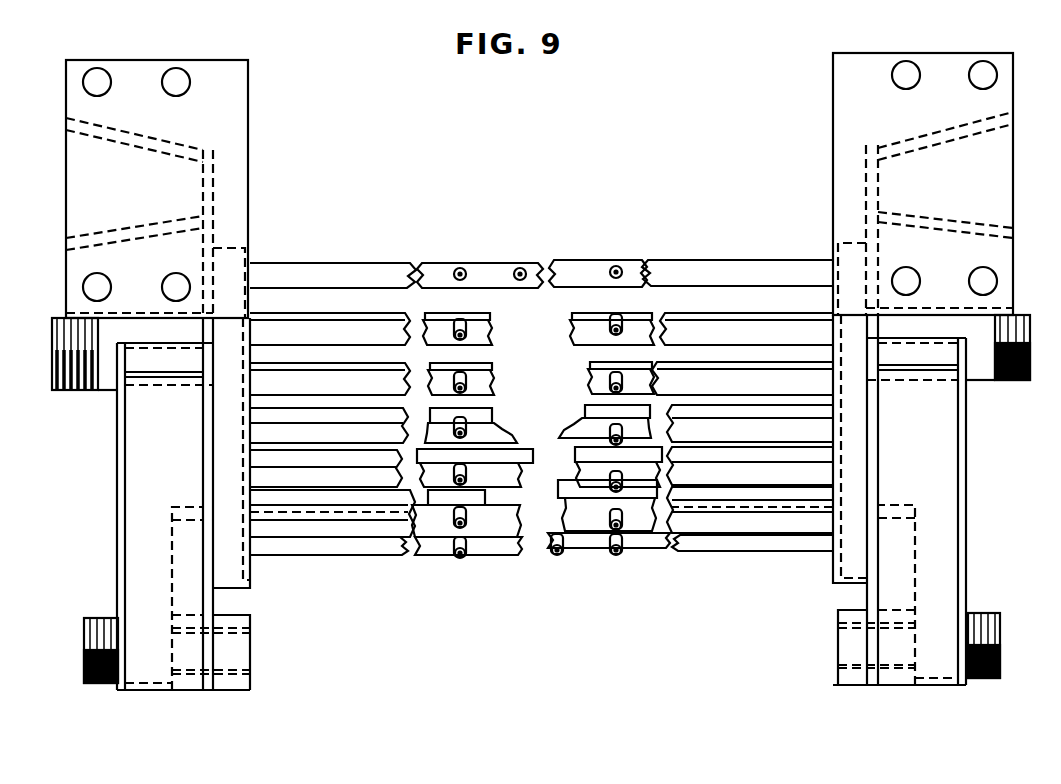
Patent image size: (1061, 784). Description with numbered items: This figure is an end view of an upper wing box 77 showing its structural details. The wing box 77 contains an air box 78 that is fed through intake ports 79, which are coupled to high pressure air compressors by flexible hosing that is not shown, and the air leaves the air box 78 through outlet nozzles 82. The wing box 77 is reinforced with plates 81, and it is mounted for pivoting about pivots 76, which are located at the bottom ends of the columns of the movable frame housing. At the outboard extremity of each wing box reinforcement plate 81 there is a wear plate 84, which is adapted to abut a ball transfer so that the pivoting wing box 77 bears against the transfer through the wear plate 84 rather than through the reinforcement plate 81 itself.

The pivot 76 is at (84, 645).
The wing box 77 is at (968, 425).
The air box 78 is at (380, 385).
The intake port 79 is at (53, 381).
The reinforcement plate 81 is at (205, 468).
The outlet nozzle 82 is at (615, 556).
The wear plate 84 is at (237, 126).